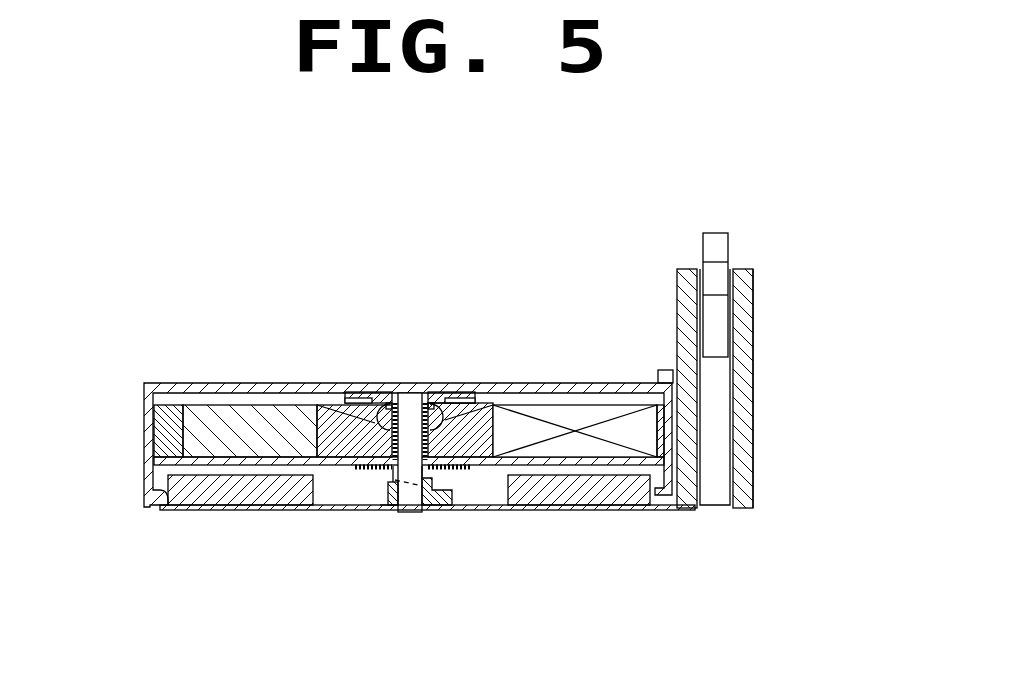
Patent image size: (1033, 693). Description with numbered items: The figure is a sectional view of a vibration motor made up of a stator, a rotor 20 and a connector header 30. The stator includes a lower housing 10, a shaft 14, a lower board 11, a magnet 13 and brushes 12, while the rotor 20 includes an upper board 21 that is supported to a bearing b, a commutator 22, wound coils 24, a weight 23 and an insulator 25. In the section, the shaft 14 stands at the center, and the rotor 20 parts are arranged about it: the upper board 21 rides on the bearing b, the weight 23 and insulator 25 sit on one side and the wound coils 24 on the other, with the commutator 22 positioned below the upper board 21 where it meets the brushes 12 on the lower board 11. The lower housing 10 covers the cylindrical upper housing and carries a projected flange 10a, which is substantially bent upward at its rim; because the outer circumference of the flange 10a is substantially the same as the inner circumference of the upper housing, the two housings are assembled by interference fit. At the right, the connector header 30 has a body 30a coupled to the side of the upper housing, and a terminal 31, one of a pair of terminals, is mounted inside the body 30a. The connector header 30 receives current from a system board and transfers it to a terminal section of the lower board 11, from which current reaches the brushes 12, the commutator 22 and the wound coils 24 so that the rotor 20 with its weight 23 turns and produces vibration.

The lower housing 10 is at (175, 512).
The projected flange 10a is at (383, 507).
The lower board 11 is at (315, 510).
The brushes 12 is at (362, 505).
The magnet 13 is at (493, 507).
The shaft 14 is at (397, 430).
The rotor 20 is at (181, 378).
The upper board 21 is at (152, 482).
The commutator 22 is at (460, 507).
The weight 23 is at (250, 405).
The wound coils 24 is at (565, 410).
The insulator 25 is at (322, 405).
The connector header 30 is at (778, 532).
The body 30a is at (757, 395).
The terminal 31 is at (719, 235).
The bearing b is at (443, 403).